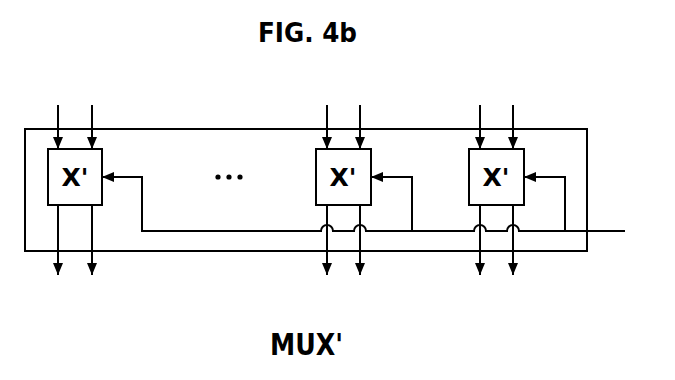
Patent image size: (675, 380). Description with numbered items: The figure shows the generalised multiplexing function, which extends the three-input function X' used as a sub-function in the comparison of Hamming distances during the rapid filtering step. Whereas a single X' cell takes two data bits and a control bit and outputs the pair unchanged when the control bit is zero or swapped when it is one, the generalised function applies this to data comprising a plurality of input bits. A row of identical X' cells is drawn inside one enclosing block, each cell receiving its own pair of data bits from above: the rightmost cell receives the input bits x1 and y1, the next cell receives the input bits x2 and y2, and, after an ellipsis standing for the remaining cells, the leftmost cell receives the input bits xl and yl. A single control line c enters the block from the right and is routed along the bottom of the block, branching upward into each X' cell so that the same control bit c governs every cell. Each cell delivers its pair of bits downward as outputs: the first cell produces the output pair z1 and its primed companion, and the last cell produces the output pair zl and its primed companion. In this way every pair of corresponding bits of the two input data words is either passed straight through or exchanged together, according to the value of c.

The control input bit c is at (372, 209).
The first input bit x x1 is at (480, 113).
The first input bit y y1 is at (515, 113).
The first output z1 is at (421, 257).
The second input bit x x2 is at (328, 113).
The second input bit y y2 is at (362, 113).
The l-th input bit x xl is at (58, 113).
The l-th input bit y yl is at (92, 113).
The l-th output zl is at (74, 258).